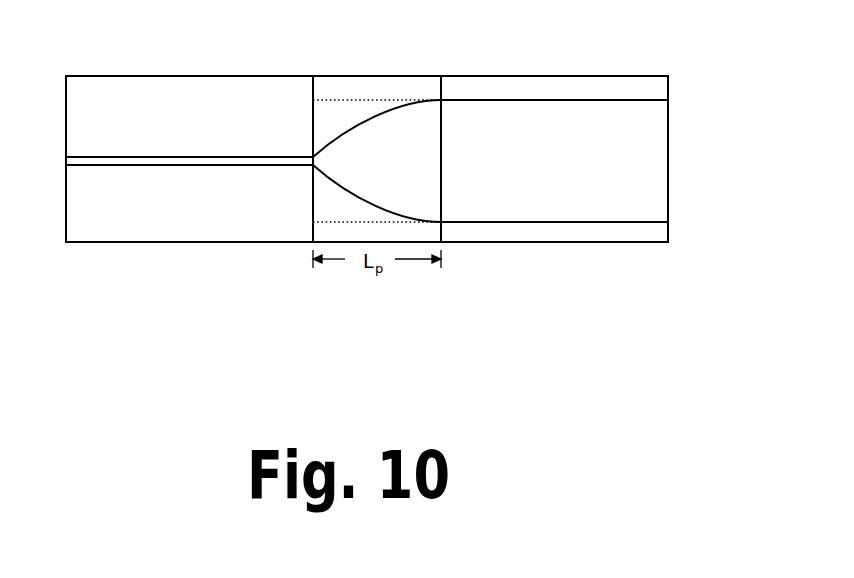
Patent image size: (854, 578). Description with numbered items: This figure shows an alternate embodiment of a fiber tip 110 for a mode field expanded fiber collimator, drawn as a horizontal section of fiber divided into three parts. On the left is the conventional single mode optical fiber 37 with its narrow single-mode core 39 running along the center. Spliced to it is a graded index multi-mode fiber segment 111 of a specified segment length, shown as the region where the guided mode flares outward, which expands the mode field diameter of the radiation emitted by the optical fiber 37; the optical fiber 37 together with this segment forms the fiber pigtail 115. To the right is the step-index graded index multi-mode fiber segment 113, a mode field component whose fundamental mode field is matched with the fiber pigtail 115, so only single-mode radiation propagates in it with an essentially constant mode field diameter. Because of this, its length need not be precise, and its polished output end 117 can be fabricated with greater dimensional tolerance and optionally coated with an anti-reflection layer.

The optical fiber 37 is at (198, 225).
The single-mode core 39 is at (232, 160).
The fiber tip 110 is at (533, 284).
The graded index multi-mode fiber segment 111 is at (353, 108).
The step-index graded index multi-mode fiber segment 113 is at (555, 125).
The fiber pigtail 115 is at (271, 282).
The output end 117 is at (668, 157).